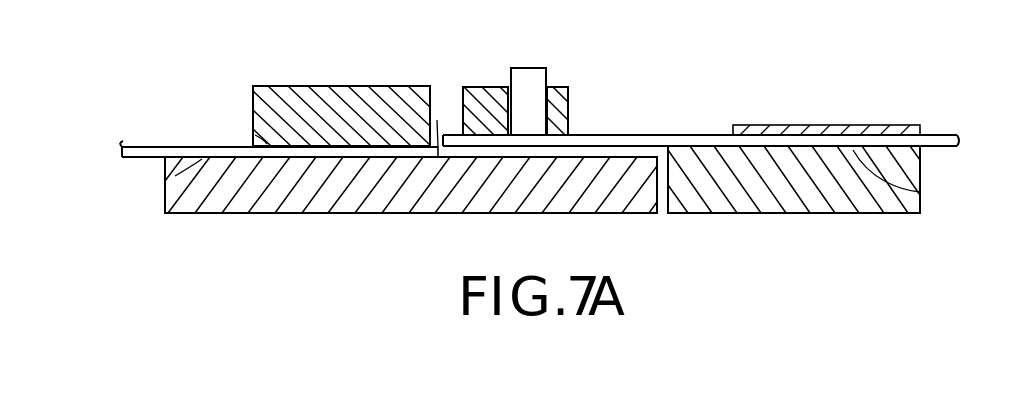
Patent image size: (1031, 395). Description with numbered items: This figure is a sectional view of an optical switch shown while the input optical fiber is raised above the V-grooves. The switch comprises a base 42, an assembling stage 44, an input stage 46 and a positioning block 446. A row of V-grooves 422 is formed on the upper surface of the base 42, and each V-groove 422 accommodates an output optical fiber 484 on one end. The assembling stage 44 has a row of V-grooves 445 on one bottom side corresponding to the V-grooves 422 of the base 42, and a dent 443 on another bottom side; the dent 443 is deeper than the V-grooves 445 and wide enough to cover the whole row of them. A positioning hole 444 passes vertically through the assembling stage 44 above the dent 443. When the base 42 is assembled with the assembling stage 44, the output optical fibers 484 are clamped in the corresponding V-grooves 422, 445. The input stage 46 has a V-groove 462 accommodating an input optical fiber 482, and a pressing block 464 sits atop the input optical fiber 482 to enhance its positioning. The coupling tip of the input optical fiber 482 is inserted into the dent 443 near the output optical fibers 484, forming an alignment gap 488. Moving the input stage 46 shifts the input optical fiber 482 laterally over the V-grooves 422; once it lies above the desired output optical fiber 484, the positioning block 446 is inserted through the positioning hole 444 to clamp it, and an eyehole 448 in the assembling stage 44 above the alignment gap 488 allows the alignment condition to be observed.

The base 42 is at (282, 203).
The V-grooves 422 is at (175, 176).
The assembling stage 44 is at (275, 93).
The V-grooves 445 is at (267, 140).
The eyehole 448 is at (428, 86).
The alignment gap 488 is at (437, 120).
The positioning block 446 is at (527, 82).
The positioning hole 444 is at (552, 108).
The dent 443 is at (563, 135).
The pressing block 464 is at (826, 128).
The input optical fiber 482 is at (938, 138).
The output optical fiber 484 is at (147, 147).
The V-groove 462 is at (920, 192).
The input stage 46 is at (770, 197).